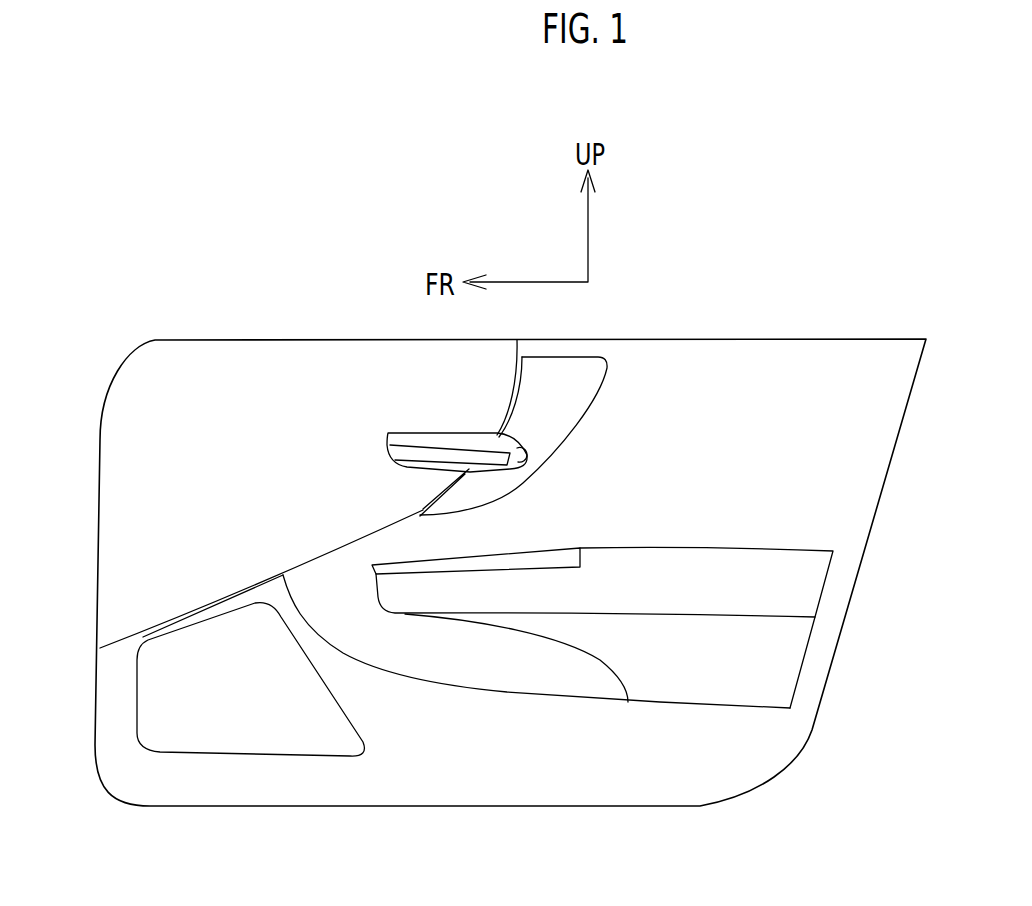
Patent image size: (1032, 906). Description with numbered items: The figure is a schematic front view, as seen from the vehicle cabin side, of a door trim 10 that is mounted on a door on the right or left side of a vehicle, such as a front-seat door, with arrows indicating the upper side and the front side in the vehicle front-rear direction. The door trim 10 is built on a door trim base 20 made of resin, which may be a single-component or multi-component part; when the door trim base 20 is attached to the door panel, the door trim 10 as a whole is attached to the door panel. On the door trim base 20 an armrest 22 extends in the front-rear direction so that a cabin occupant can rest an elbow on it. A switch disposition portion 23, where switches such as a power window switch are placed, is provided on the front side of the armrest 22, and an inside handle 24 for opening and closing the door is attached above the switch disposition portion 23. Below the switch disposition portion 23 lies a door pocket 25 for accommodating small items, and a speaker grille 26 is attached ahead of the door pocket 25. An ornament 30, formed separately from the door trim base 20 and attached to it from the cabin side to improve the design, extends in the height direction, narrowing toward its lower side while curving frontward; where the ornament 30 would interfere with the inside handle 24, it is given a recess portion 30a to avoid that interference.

The door trim 10 is at (556, 543).
The door trim base 20 is at (741, 372).
The armrest 22 is at (712, 547).
The switch disposition portion 23 is at (512, 558).
The inside handle 24 is at (414, 452).
The door pocket 25 is at (477, 690).
The speaker grille 26 is at (238, 720).
The ornament 30 is at (557, 425).
The recess portion 30a is at (521, 458).